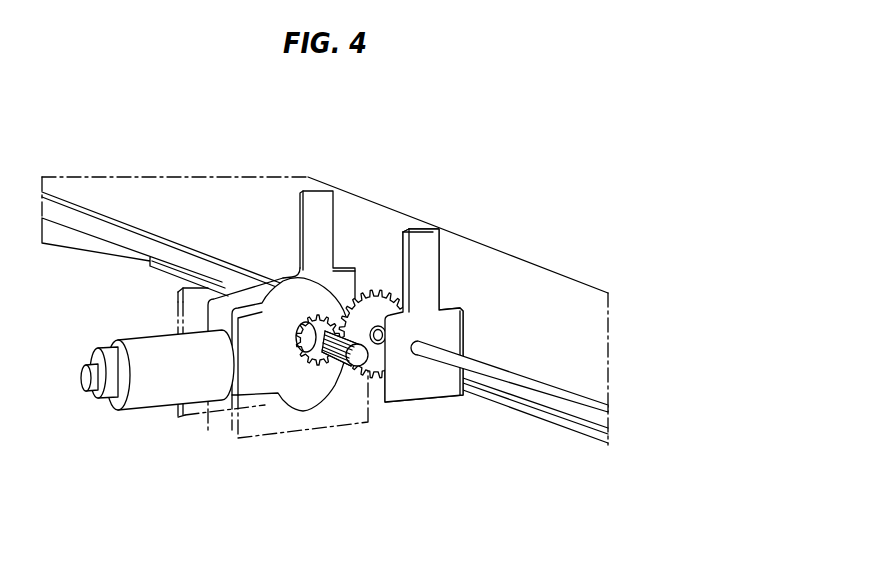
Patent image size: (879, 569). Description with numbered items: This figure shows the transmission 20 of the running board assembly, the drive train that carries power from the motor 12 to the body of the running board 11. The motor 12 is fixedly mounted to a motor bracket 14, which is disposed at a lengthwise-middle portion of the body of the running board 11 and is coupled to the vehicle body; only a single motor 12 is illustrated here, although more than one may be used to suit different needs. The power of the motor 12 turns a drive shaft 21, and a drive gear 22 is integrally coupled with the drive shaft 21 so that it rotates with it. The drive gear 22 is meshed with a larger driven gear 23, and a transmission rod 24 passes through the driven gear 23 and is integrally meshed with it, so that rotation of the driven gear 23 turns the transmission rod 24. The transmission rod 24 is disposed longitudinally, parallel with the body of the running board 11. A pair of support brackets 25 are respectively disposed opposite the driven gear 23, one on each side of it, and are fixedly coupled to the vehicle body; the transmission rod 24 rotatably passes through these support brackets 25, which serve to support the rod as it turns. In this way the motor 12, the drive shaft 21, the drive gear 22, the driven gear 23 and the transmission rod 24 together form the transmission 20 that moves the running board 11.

The running board 11 is at (520, 290).
The motor 12 is at (137, 393).
The motor bracket 14 is at (232, 427).
The transmission 20 is at (283, 417).
The drive shaft 21 is at (343, 366).
The drive gear 22 is at (318, 372).
The driven gear 23 is at (375, 358).
The transmission rod 24 is at (542, 393).
The support brackets 25 is at (425, 242).